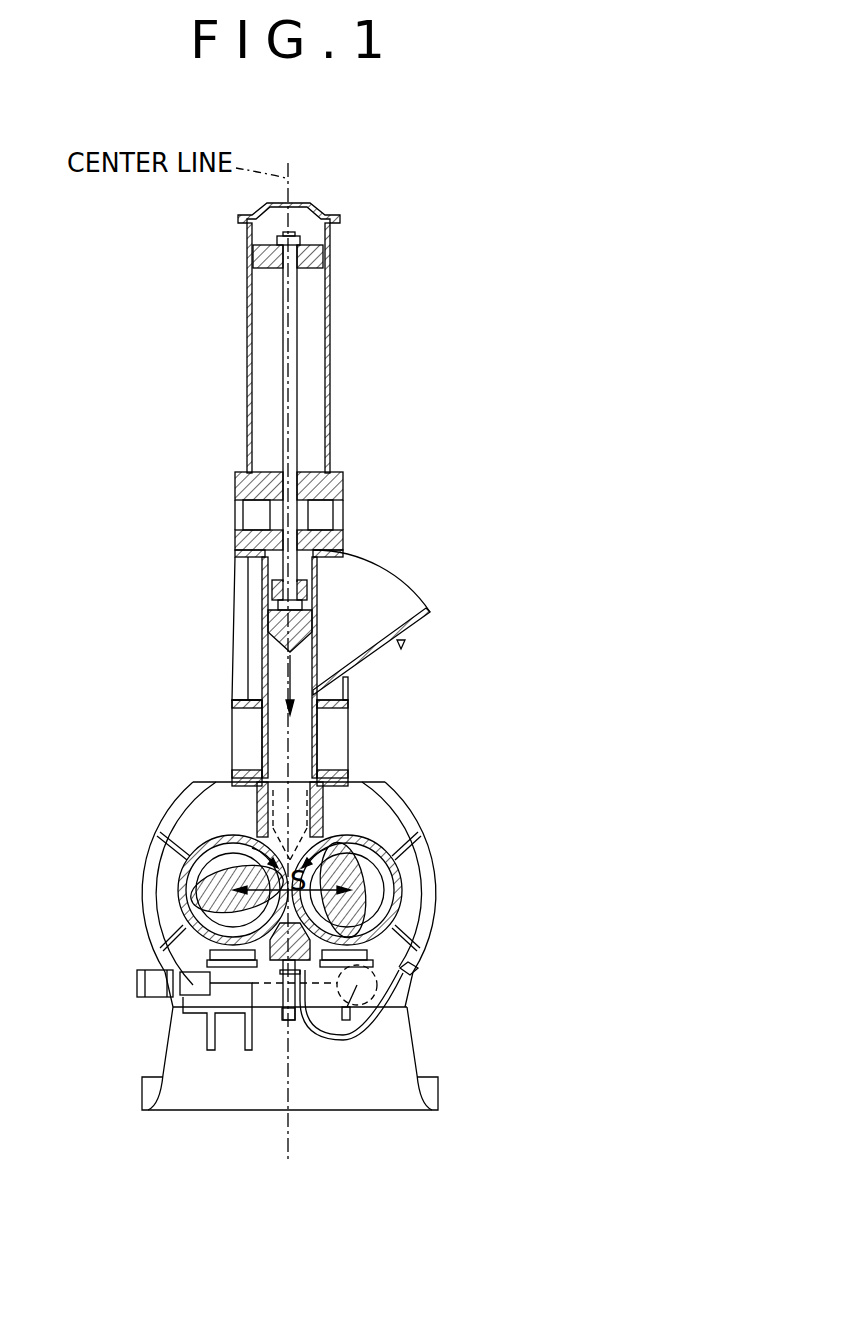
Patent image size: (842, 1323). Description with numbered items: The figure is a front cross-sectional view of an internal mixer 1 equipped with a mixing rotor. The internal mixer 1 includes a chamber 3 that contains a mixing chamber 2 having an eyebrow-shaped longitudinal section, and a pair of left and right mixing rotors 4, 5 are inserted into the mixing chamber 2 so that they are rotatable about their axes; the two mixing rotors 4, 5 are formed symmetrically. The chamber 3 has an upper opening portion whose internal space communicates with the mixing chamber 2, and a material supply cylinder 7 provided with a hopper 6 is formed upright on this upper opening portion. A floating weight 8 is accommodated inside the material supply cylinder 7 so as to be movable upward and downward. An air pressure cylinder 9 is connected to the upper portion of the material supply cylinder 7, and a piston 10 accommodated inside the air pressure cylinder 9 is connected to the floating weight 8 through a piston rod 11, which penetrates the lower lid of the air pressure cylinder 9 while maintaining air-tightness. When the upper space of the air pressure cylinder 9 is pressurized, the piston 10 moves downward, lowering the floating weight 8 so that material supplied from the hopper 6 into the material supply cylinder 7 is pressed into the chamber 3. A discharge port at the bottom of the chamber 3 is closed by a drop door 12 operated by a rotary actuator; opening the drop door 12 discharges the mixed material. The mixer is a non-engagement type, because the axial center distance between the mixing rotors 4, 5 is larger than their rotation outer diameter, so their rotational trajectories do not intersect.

The internal mixer 1 is at (408, 167).
The mixing chamber 2 is at (220, 928).
The chamber 3 is at (400, 868).
The mixing rotor 4 is at (200, 888).
The mixing rotor 5 is at (365, 890).
The hopper 6 is at (372, 577).
The material supply cylinder 7 is at (350, 742).
The floating weight 8 is at (277, 625).
The air pressure cylinder 9 is at (330, 303).
The piston 10 is at (316, 257).
The piston rod 11 is at (297, 370).
The drop door 12 is at (277, 953).